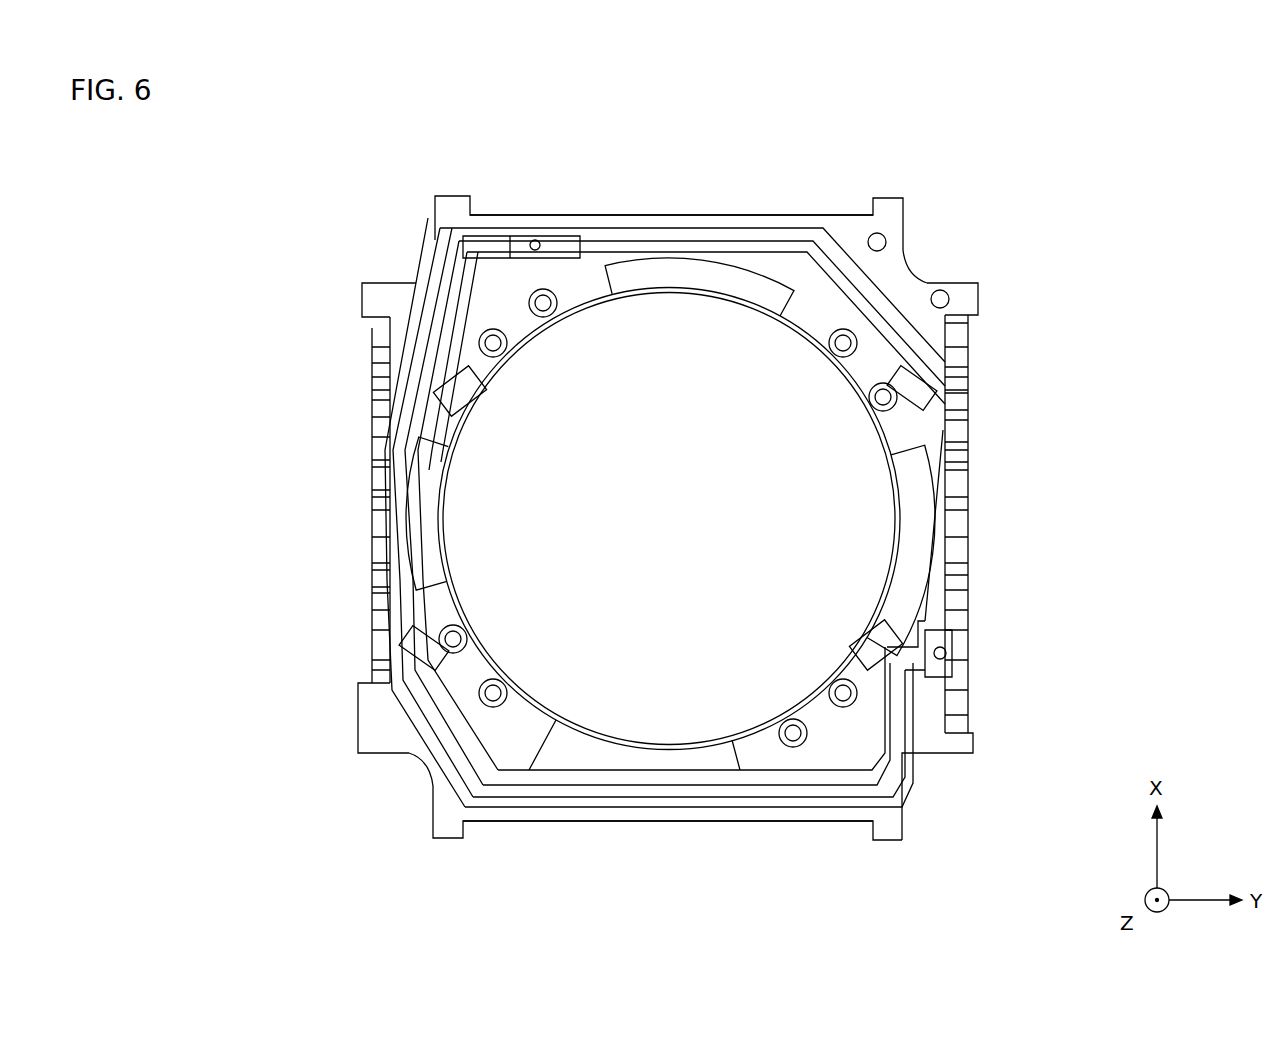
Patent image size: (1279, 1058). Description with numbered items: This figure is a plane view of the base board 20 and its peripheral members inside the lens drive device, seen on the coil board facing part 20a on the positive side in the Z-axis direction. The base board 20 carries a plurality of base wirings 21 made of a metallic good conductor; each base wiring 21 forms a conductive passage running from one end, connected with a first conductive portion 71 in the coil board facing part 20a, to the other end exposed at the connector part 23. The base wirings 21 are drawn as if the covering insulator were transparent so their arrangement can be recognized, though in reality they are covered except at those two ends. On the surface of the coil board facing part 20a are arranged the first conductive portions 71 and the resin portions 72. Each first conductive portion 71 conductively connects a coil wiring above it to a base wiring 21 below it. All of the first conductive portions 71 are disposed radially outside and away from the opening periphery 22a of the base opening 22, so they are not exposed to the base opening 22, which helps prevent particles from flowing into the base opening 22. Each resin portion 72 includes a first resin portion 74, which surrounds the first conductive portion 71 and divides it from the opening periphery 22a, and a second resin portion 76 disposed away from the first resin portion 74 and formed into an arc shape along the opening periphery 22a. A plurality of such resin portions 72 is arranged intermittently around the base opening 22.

The base board 20 is at (972, 223).
The coil board facing part 20a is at (845, 233).
The base wirings 21 is at (433, 603).
The base opening 22 is at (660, 511).
The opening periphery 22a is at (647, 290).
The connector part 23 is at (965, 338).
The first conductive portion 71 is at (493, 330).
The resin portion 72 is at (1036, 383).
The first resin portion 74 is at (482, 264).
The second resin portion 76 is at (428, 425).